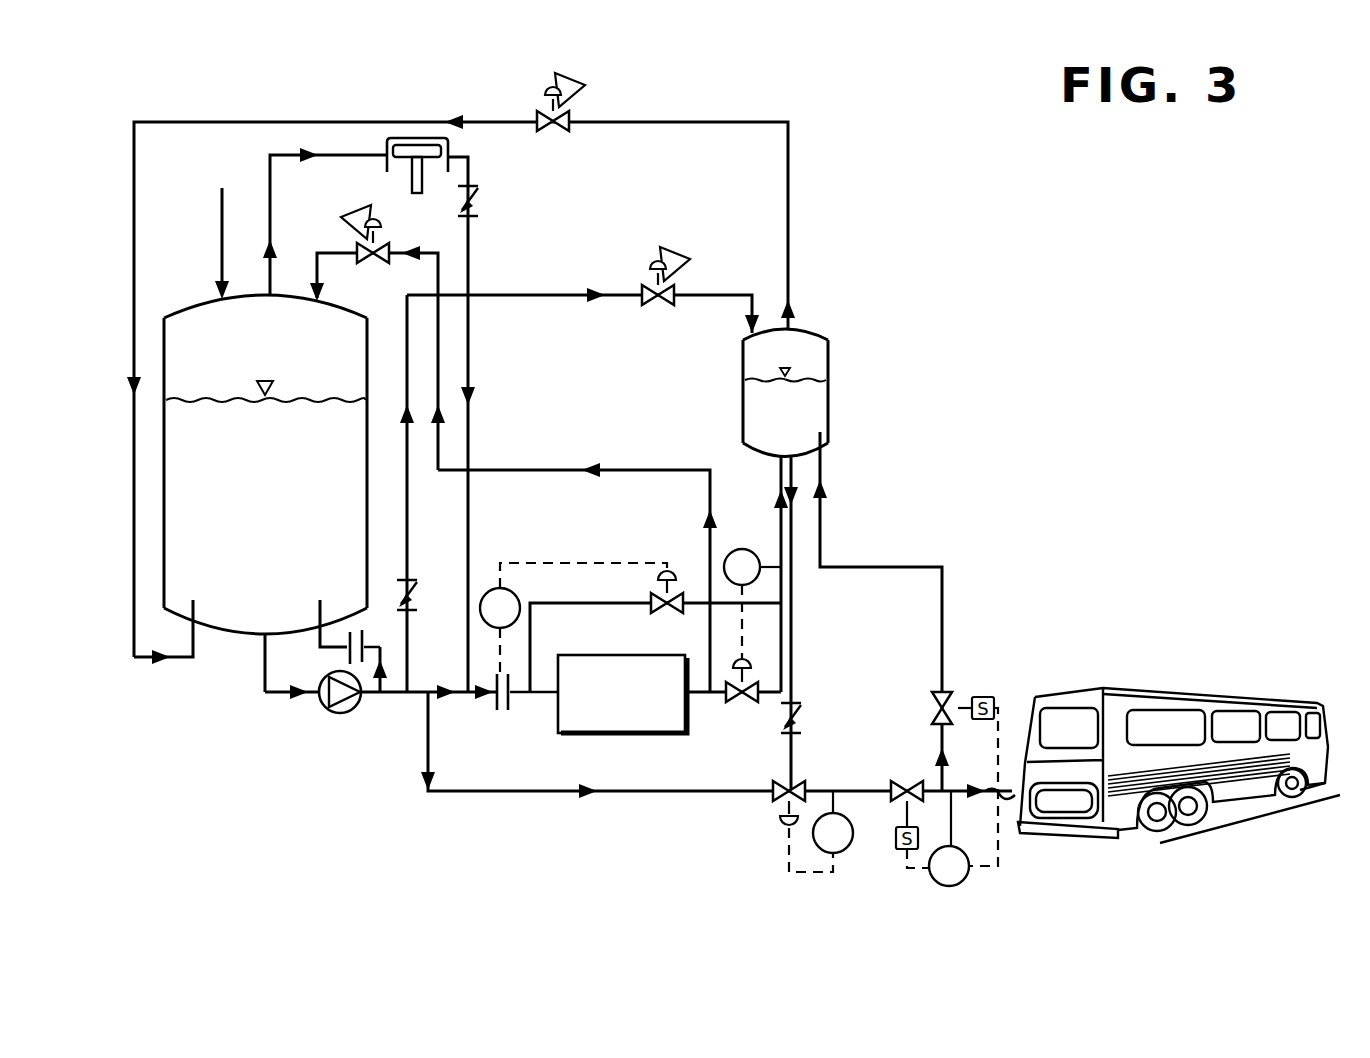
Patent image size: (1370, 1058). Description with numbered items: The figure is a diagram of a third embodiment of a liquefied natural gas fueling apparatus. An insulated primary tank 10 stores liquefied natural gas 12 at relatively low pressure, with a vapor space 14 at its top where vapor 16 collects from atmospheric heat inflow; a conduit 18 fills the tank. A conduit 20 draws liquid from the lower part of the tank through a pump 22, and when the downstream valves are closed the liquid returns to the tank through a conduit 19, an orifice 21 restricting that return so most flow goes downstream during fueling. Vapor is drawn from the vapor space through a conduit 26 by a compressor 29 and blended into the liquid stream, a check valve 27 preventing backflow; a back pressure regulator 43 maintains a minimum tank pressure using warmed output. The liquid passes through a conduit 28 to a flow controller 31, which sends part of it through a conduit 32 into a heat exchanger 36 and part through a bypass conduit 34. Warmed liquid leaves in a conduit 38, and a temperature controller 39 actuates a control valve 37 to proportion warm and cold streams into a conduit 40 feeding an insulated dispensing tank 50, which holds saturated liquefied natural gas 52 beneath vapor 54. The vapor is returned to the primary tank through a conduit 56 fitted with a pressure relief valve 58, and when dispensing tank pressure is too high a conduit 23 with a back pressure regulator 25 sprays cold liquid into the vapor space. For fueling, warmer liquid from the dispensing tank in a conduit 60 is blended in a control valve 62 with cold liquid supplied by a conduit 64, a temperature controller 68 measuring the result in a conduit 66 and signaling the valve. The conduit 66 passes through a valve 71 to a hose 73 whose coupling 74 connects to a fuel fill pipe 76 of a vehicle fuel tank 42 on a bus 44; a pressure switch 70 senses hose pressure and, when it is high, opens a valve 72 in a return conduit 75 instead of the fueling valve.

The primary tank 10 is at (372, 488).
The liquefied natural gas 12 is at (279, 509).
The vapor space 14 is at (196, 305).
The vapor 16 is at (283, 356).
The conduit 18 is at (220, 240).
The conduit 19 is at (383, 655).
The conduit 20 is at (437, 688).
The orifice 21 is at (362, 630).
The pump 22 is at (340, 713).
The conduit 23 is at (410, 550).
The back pressure regulator 25 is at (650, 285).
The conduit 26 is at (380, 148).
The check valve 27 is at (480, 191).
The conduit 28 is at (465, 702).
The compressor 29 is at (433, 133).
The flow controller 31 is at (492, 588).
The conduit 32 is at (543, 700).
The conduit 34 is at (532, 603).
The heat exchanger 36 is at (585, 735).
The control valve 37 is at (765, 702).
The conduit 38 is at (690, 680).
The temperature controller 39 is at (733, 552).
The conduit 40 is at (778, 533).
The vehicle fuel tank 42 is at (1182, 815).
The back pressure regulator 43 is at (385, 245).
The bus 44 is at (1186, 680).
The dispensing tank 50 is at (743, 360).
The liquefied natural gas 52 is at (803, 425).
The vapor 54 is at (806, 363).
The conduit 56 is at (416, 120).
The pressure relief valve 58 is at (568, 114).
The conduit 60 is at (795, 672).
The control valve 62 is at (797, 786).
The conduit 64 is at (557, 793).
The conduit 66 is at (853, 792).
The temperature controller 68 is at (815, 835).
The pressure switch 70 is at (930, 877).
The valve 71 is at (913, 781).
The valve 72 is at (950, 692).
The hose 73 is at (997, 855).
The coupling 74 is at (1017, 797).
The conduit 75 is at (945, 618).
The fuel fill pipe 76 is at (1108, 769).